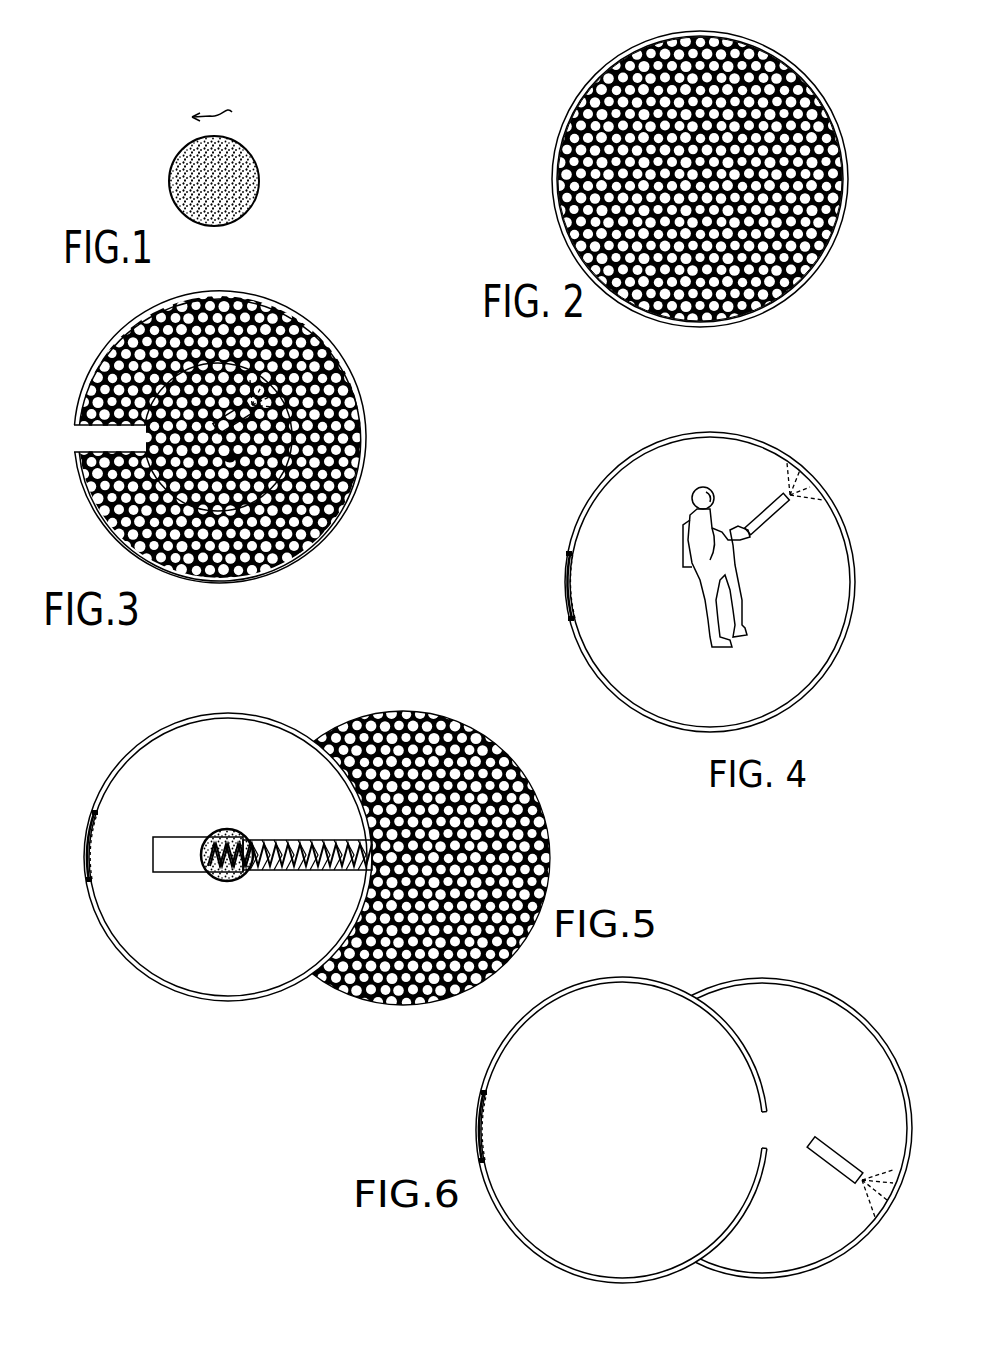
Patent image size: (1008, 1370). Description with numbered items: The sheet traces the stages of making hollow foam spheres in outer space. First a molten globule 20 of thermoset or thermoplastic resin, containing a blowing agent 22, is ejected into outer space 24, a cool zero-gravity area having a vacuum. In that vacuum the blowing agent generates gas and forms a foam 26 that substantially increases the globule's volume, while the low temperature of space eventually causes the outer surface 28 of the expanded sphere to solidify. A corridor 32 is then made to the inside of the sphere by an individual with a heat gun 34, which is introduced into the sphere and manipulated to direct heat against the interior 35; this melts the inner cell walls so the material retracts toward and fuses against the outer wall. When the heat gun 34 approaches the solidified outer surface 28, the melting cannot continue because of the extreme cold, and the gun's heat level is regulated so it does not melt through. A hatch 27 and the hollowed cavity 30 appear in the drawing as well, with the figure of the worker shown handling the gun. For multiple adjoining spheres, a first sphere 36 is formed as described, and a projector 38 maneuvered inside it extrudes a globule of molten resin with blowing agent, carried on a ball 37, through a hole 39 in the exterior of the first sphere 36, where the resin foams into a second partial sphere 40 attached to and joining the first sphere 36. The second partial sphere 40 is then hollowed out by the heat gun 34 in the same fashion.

In FIG. 1, the molten globule 20 is at (243, 156).
In FIG. 1, the blowing agent 22 is at (230, 219).
In FIG. 1, the outer space 24 is at (230, 111).
In FIG. 2, the foam 26 is at (770, 46).
In FIG. 4, the hatch 27 is at (562, 568).
In FIG. 2, the outer surface 28 is at (849, 178).
In FIG. 3, the outer surface 28 is at (221, 437).
In FIG. 4, the outer surface 28 is at (607, 472).
In FIG. 3, the central cavity 30 is at (222, 459).
In FIG. 3, the corridor 32 is at (100, 439).
In FIG. 3, the heat gun 34 is at (235, 413).
In FIG. 4, the heat gun 34 is at (757, 527).
In FIG. 6, the heat gun 34 is at (832, 1157).
In FIG. 3, the interior 35 is at (293, 432).
In FIG. 5, the first sphere 36 is at (107, 940).
In FIG. 6, the first sphere 36 is at (622, 1130).
In FIG. 5, the ball member 37 is at (210, 880).
In FIG. 5, the projector 38 is at (225, 829).
In FIG. 5, the hole 39 is at (343, 843).
In FIG. 5, the second partial sphere 40 is at (523, 783).
In FIG. 6, the second partial sphere 40 is at (872, 1028).